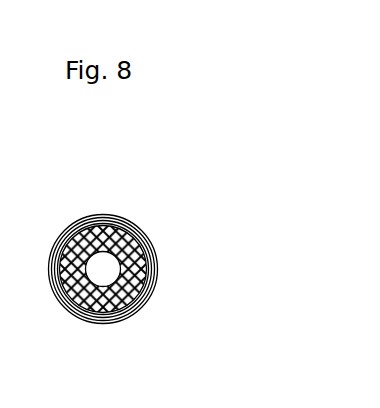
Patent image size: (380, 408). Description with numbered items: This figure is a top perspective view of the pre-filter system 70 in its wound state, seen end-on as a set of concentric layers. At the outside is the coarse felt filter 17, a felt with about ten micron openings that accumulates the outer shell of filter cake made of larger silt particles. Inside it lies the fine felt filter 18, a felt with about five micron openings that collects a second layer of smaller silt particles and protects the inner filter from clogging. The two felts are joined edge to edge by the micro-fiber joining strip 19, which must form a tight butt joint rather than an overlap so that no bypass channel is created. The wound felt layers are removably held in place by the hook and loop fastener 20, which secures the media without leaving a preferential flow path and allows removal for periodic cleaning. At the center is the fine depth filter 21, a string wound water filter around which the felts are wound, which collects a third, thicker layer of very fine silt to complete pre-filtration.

The pre-filter system 70 is at (201, 219).
The coarse felt filter 17 is at (114, 250).
The fine felt filter 18 is at (125, 258).
The micro-fiber joining strip 19 is at (133, 269).
The hook and loop fastener 20 is at (137, 269).
The fine depth filter 21 is at (142, 282).